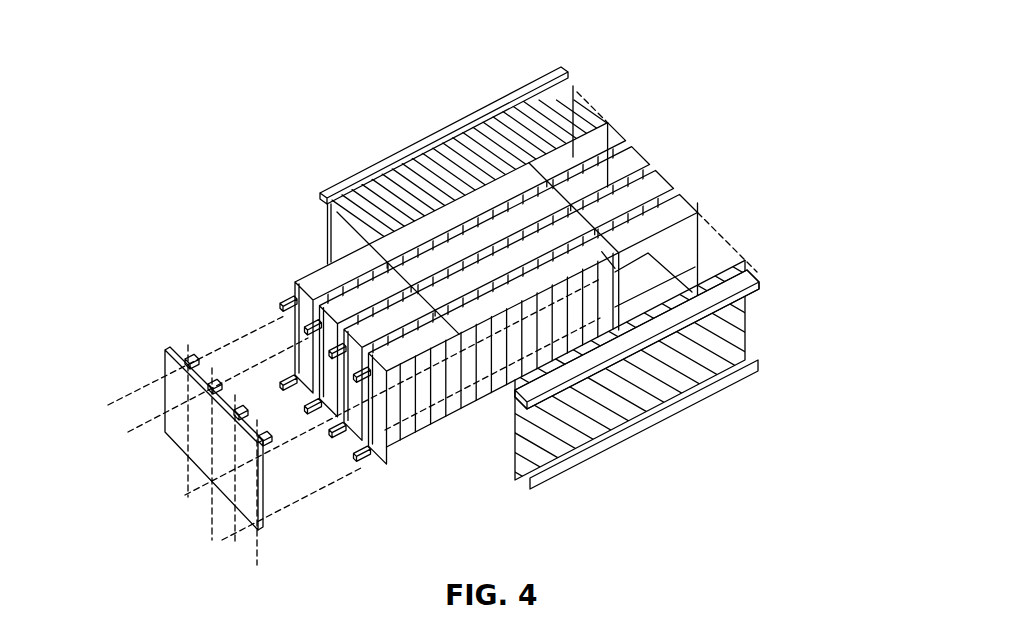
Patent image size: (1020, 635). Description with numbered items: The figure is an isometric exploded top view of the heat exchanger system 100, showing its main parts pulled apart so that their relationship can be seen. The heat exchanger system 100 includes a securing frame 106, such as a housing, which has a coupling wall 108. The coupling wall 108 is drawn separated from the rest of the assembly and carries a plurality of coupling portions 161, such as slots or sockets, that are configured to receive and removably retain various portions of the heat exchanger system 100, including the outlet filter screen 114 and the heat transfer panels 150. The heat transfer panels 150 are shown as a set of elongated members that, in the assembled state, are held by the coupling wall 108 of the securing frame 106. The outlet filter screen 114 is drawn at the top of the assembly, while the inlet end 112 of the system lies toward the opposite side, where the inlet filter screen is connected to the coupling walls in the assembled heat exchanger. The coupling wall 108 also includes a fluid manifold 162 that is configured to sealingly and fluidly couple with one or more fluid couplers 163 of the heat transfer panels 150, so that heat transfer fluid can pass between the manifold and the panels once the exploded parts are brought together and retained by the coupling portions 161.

The heat exchanger system 100 is at (546, 44).
The outlet filter screen 114 is at (578, 86).
The heat transfer panels 150 is at (623, 133).
The inlet end 112 is at (756, 323).
The securing frame 106 is at (215, 504).
The coupling wall 108 is at (176, 461).
The coupling portions 161 is at (255, 415).
The fluid manifold 162 is at (268, 512).
The fluid couplers 163 is at (372, 464).